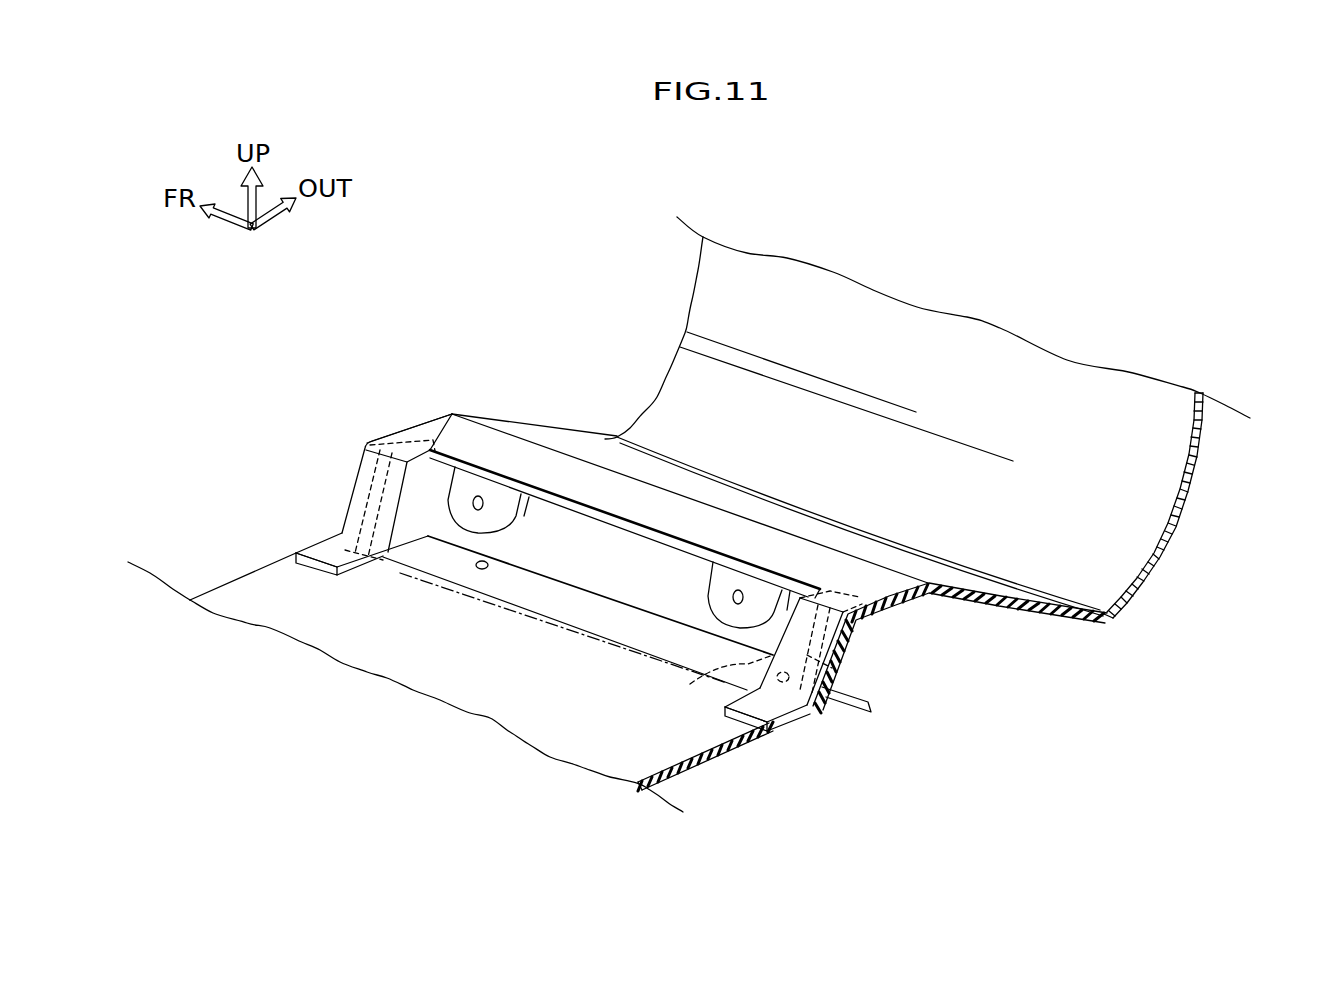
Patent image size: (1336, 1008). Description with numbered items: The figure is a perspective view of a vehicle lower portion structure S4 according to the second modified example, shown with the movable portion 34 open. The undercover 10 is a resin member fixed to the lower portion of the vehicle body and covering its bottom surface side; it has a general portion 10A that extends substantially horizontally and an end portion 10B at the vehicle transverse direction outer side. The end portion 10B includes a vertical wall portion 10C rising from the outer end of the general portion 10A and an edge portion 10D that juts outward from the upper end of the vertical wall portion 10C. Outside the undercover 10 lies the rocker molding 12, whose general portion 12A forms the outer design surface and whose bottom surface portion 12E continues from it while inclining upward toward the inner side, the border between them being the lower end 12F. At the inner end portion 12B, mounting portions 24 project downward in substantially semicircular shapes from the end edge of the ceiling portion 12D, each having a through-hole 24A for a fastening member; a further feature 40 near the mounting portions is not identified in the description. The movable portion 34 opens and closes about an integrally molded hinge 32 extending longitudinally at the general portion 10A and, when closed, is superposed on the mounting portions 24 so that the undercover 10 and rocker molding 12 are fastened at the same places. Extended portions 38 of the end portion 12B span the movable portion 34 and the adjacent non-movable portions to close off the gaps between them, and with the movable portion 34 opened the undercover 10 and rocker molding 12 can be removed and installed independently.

The joining step S4 is at (477, 303).
The undercover 10 is at (757, 765).
The general portion 10A is at (713, 765).
The end portion 10B is at (268, 322).
The vertical wall portion 10C is at (353, 452).
The edge portion 10D is at (395, 430).
The rocker molding 12 is at (1208, 500).
The general portion 12A is at (1200, 454).
The end portion 12B is at (733, 690).
The ceiling portion 12D is at (670, 508).
The bottom surface portion 12E is at (927, 565).
The lower end 12F is at (1113, 623).
The mounting portion 24 is at (475, 537).
The through-hole 24A is at (478, 508).
The hinge 32 is at (568, 630).
The movable portion 34 is at (853, 703).
The extended portion 38 is at (362, 462).
The adhesive bead 40 is at (493, 567).